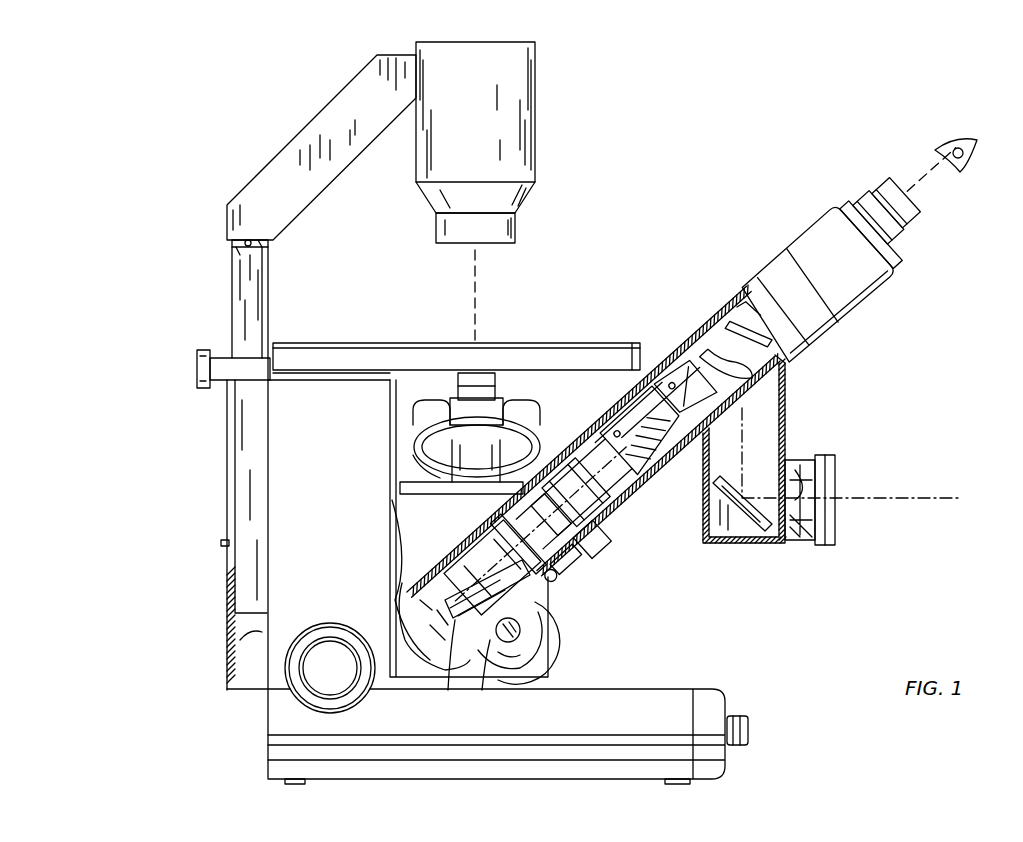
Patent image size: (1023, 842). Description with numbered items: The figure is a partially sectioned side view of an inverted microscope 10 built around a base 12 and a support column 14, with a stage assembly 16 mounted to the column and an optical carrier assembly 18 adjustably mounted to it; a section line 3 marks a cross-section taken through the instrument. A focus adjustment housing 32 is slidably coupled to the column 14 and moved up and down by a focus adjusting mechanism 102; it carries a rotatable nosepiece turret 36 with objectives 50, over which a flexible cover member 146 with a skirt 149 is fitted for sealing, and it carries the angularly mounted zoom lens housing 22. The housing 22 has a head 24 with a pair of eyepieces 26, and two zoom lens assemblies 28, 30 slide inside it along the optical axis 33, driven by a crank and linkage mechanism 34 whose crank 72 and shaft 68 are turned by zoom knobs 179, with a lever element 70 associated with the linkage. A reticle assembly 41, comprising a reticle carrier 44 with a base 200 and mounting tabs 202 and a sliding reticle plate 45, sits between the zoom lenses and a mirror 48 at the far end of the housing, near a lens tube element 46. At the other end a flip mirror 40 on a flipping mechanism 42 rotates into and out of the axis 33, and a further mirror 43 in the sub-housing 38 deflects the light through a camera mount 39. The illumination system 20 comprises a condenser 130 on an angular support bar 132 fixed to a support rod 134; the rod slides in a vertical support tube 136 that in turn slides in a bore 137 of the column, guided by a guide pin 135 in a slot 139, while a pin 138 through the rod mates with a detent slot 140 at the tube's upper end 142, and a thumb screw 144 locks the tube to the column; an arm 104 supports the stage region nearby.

The inverted microscope 10 is at (662, 172).
The base 12 is at (530, 780).
The support column 14 is at (188, 540).
The stage assembly 16 is at (369, 330).
The optical carrier assembly 18 is at (605, 592).
The illumination system 20 is at (523, 142).
The zoom lens housing 22 is at (645, 500).
The head 24 is at (820, 216).
The eyepieces 26 is at (862, 188).
The zoom lens assembly 28 is at (680, 370).
The zoom lens assembly 30 is at (642, 428).
The focus adjustment housing 32 is at (535, 661).
The optical axis 33 is at (480, 300).
The crank and linkage mechanism 34 is at (432, 620).
The nosepiece turret 36 is at (440, 431).
The sub-housing 38 is at (796, 449).
The camera mount 39 is at (838, 480).
The flip mirror 40 is at (740, 300).
The reticle assembly 41 is at (575, 505).
The flipping mechanism 42 is at (807, 370).
The mirror 43 is at (742, 492).
The reticle carrier 44 is at (598, 545).
The reticle plate 45 is at (590, 575).
The objective lens tube 46 is at (475, 560).
The mirror 48 is at (488, 584).
The objectives 50 is at (440, 398).
The shaft 68 is at (505, 644).
The lever arm 70 is at (492, 642).
The crank 72 is at (455, 628).
The focus adjusting mechanism 102 is at (350, 606).
The stage support arm 104 is at (222, 355).
The condenser 130 is at (536, 186).
The angular support bar 132 is at (318, 125).
The support rod 134 is at (232, 245).
The guide pin 135 is at (194, 558).
The vertical support tube 136 is at (269, 275).
The bore 137 is at (235, 672).
The pin 138 is at (262, 240).
The slot 139 is at (230, 440).
The detent slot 140 is at (240, 262).
The upper end 142 is at (270, 246).
The thumb screw 144 is at (197, 371).
The flexible cover member 146 is at (433, 494).
The skirt 149 is at (415, 445).
The zoom knobs 179 is at (522, 670).
The base 200 is at (548, 530).
The mounting tabs 202 is at (548, 572).
The section line 3- 3 is at (428, 700).